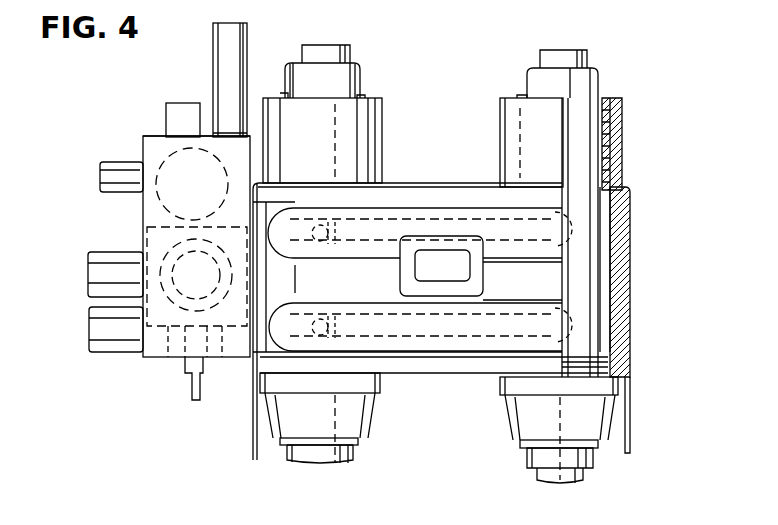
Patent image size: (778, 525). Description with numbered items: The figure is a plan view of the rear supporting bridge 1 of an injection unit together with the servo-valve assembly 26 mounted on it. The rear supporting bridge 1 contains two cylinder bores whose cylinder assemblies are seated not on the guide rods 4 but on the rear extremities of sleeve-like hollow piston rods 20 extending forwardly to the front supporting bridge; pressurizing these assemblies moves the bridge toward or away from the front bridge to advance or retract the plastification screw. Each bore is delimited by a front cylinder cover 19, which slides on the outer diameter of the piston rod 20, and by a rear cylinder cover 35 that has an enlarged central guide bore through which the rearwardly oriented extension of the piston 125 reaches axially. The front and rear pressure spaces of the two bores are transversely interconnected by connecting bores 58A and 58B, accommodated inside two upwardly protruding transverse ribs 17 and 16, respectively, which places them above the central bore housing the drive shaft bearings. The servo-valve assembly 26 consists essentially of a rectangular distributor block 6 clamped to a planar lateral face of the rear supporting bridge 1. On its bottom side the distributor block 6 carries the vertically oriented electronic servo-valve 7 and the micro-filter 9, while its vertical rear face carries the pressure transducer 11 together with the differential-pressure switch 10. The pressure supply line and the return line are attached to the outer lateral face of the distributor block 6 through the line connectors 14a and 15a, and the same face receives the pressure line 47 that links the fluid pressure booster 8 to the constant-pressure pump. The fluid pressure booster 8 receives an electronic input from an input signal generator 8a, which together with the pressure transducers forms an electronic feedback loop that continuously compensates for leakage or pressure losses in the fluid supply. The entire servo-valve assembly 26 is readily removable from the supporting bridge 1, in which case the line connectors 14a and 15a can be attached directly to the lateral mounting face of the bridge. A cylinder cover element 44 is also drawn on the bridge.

The rear supporting bridge 1 is at (627, 242).
The guide rods 4 is at (340, 53).
The distributor block 6 is at (241, 152).
The electronic servo-valve 7 is at (168, 330).
The fluid pressure booster 8 is at (215, 307).
The input signal generator 8a is at (207, 370).
The micro-filter 9 is at (227, 175).
The differential-pressure switch 10 is at (178, 118).
The pressure transducer 11 is at (225, 57).
The line connector 14a is at (102, 270).
The line connector 15a is at (102, 327).
The transverse rib 16 is at (350, 215).
The transverse rib 17 is at (343, 340).
The front cylinder cover 19 is at (355, 430).
The hollow piston rod 20 is at (583, 463).
The servo-valve assembly 26 is at (143, 222).
The rear cylinder cover 35 is at (513, 138).
The cylinder cover 44 is at (517, 99).
The pressure line 47 is at (108, 176).
The connecting bore 58A is at (462, 325).
The connecting bore 58B is at (433, 232).
The piston 125 is at (537, 78).